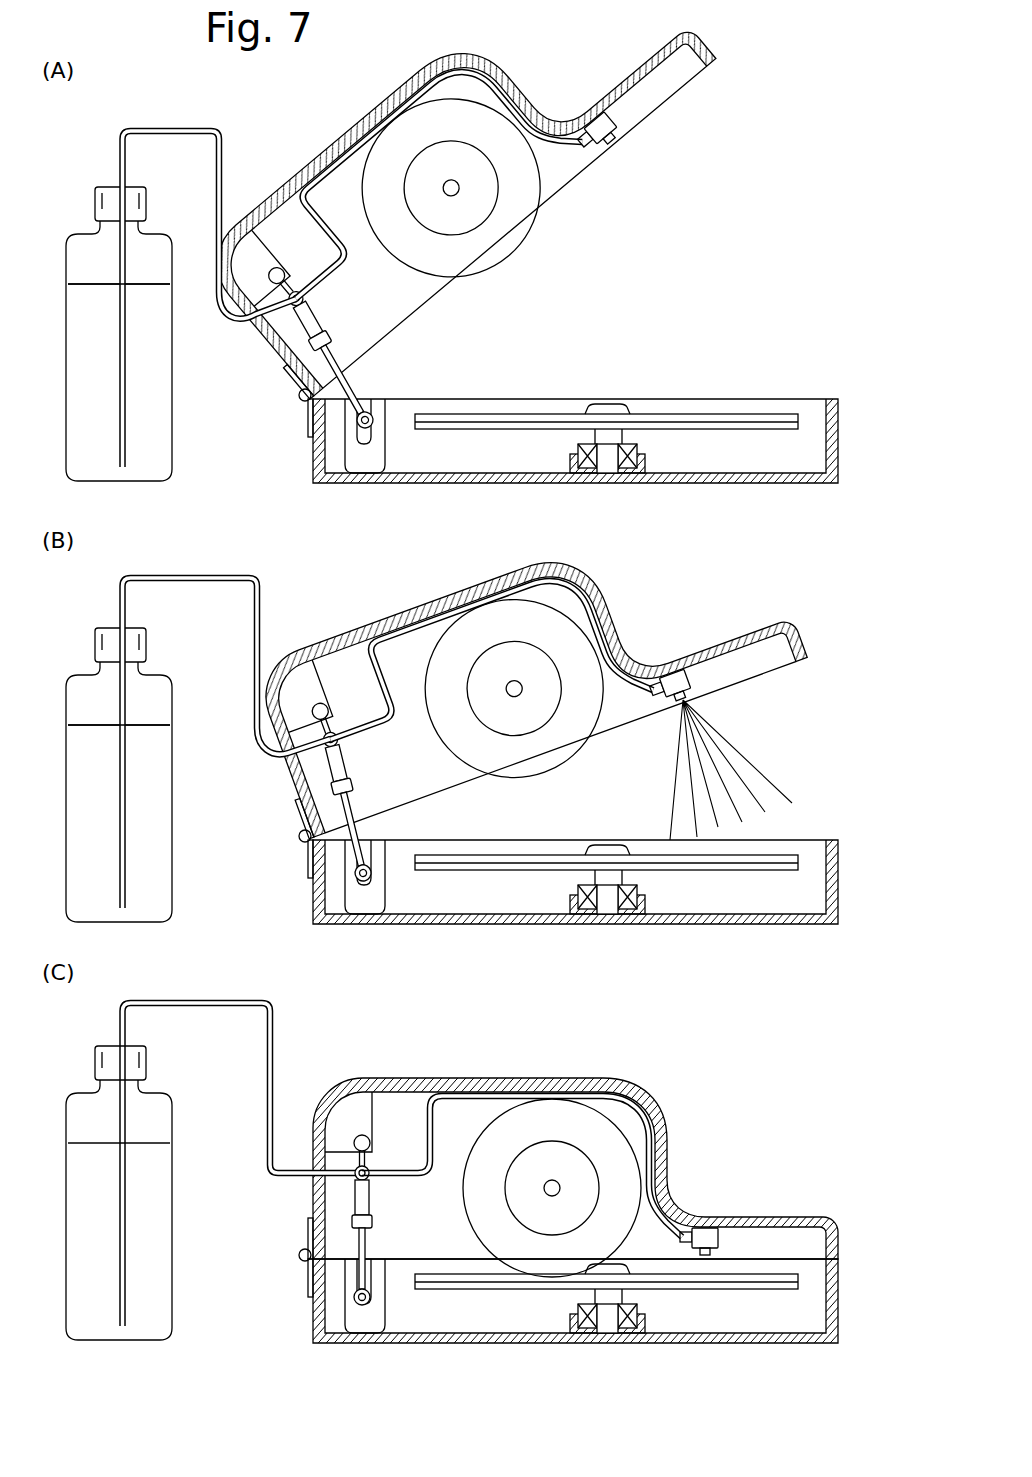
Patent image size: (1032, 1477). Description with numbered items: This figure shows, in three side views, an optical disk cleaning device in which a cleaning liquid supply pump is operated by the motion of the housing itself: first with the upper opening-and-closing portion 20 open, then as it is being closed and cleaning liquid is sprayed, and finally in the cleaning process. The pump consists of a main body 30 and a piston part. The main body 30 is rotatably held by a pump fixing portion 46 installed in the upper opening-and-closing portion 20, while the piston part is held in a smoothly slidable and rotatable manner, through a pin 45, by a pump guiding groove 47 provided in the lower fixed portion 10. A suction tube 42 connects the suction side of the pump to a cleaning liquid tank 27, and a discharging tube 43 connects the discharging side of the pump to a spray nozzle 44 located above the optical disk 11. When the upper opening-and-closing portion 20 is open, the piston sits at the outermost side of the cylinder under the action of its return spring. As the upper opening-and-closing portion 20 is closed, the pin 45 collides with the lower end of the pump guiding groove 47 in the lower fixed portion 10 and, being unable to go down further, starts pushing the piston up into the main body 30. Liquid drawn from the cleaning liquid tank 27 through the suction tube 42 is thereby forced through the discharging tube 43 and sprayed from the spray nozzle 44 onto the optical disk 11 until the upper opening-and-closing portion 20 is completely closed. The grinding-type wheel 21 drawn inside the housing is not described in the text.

The lower fixed portion 10 is at (838, 1307).
The optical disk 11 is at (745, 1272).
The upper opening-and-closing portion 20 is at (827, 1227).
The grinding wheel 21 is at (603, 1145).
The cleaning liquid tank 27 is at (162, 1273).
The main body 30 is at (363, 1195).
The suction tube 42 is at (270, 1097).
The discharging tube 43 is at (450, 1085).
The spray nozzle 44 is at (707, 1235).
The pin 45 is at (368, 1293).
The pump fixing portion 46 is at (360, 1117).
The pump guiding groove 47 is at (372, 1283).